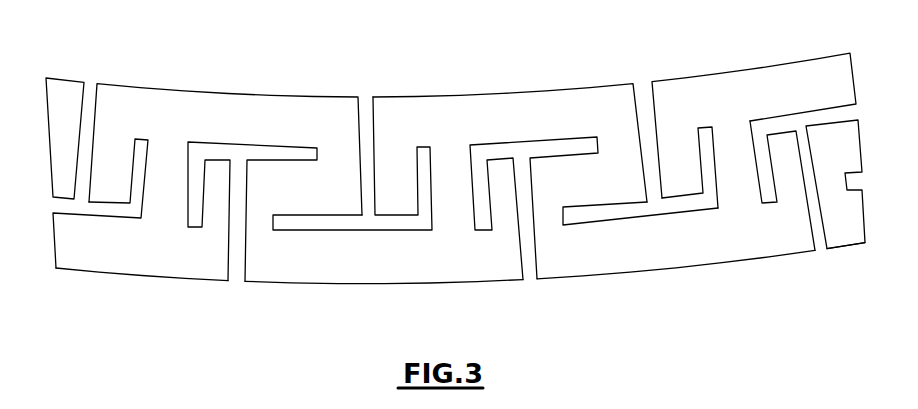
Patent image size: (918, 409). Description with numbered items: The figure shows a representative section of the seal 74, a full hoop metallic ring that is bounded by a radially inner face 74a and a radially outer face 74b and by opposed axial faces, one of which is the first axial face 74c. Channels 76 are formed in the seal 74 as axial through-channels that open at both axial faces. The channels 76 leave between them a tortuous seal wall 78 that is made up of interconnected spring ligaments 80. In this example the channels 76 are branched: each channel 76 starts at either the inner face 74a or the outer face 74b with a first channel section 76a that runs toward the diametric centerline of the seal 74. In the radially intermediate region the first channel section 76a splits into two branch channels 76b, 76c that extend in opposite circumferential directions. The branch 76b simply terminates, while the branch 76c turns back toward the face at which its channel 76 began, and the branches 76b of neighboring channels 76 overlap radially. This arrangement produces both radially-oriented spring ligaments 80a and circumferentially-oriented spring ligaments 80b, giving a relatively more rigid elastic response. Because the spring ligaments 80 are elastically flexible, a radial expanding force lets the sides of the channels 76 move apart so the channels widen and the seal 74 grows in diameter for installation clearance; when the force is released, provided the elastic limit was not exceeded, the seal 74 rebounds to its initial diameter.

The seal 74 is at (139, 310).
The radially inner face 74a is at (290, 95).
The radially outer face 74b is at (308, 284).
The first axial face 74c is at (392, 140).
The channels 76 is at (314, 233).
The first channel section 76a is at (647, 127).
The branch channel 76b is at (583, 224).
The branch channel 76c is at (683, 214).
The tortuous seal wall 78 is at (190, 163).
The spring ligaments 80 is at (302, 180).
The radially-oriented spring ligament 80a is at (738, 153).
The circumferentially-oriented spring ligament 80b is at (577, 177).